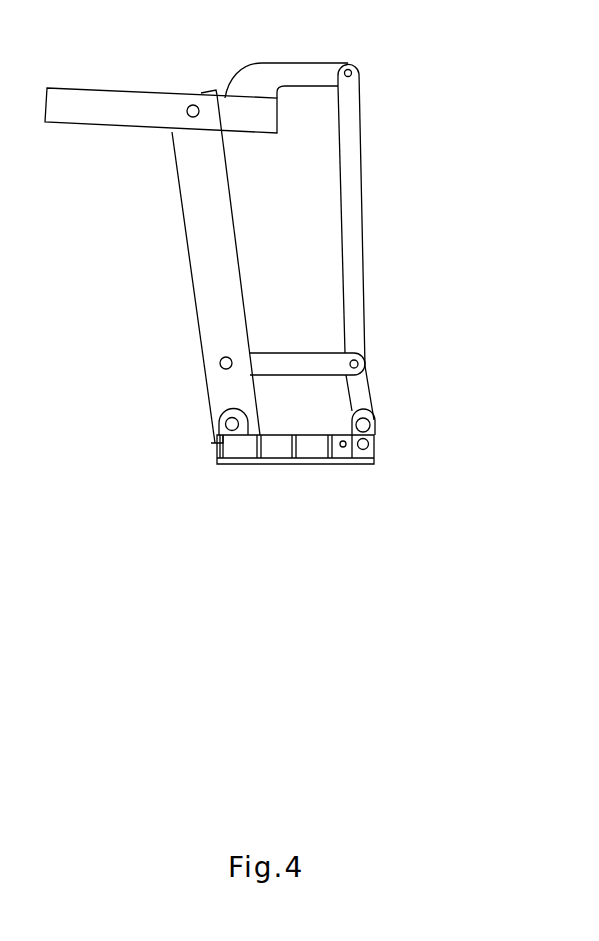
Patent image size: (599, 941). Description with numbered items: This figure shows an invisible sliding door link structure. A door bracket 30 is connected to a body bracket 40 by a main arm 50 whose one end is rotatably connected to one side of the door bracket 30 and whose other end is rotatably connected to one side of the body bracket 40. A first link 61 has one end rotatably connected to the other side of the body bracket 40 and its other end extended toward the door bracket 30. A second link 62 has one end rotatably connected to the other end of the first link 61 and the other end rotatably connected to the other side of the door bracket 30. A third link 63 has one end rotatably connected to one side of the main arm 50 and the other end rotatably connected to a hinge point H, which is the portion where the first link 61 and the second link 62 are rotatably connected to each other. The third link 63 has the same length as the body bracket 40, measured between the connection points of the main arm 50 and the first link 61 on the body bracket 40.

The door bracket 30 is at (177, 102).
The main arm 50 is at (188, 256).
The second link 62 is at (357, 212).
The third link 63 is at (300, 358).
The hinge point H is at (360, 363).
The first link 61 is at (363, 397).
The body bracket 40 is at (313, 450).